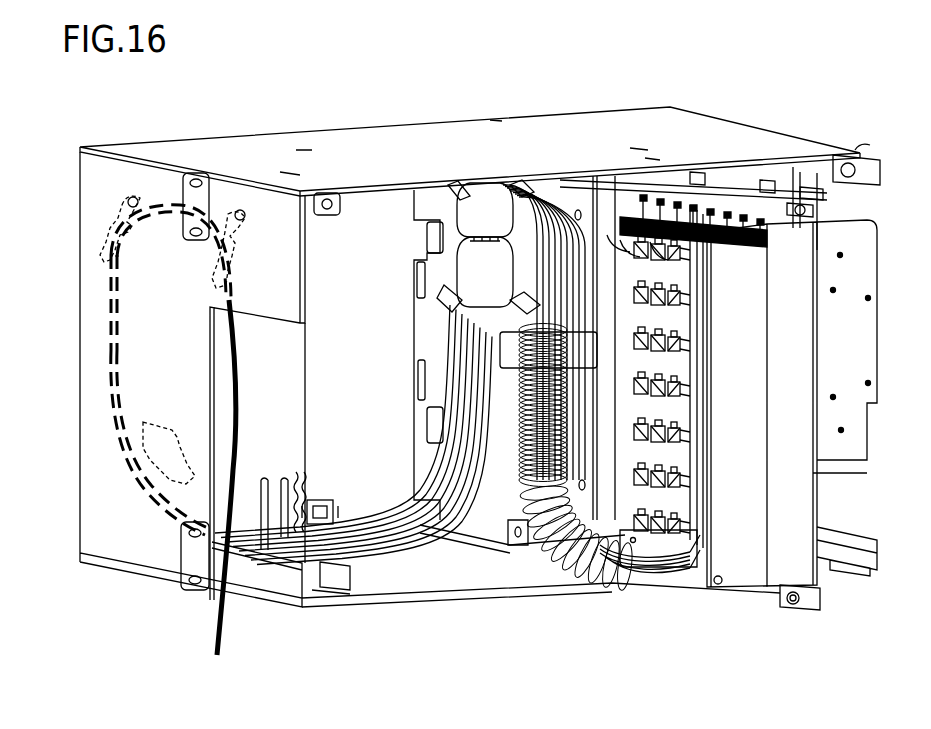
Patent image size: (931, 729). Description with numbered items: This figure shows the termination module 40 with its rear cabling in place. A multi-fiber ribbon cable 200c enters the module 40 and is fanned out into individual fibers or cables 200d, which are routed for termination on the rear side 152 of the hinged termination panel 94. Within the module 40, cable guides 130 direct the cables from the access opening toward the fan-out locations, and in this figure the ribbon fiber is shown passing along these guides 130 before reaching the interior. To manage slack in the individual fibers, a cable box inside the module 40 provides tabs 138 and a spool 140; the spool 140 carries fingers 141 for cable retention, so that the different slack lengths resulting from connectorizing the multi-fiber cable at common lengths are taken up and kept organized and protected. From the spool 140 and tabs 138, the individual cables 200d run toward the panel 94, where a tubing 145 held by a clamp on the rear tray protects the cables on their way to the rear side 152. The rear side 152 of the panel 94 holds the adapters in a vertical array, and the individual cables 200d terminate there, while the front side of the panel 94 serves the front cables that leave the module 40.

The termination module 40 is at (227, 145).
The termination panel 94 is at (747, 207).
The cable guide 130 is at (117, 240).
The tab 138 is at (510, 350).
The spool 140 is at (473, 215).
The finger 141 is at (450, 292).
The tubing 145 is at (583, 577).
The rear side 152 is at (652, 187).
The multi-fiber cable 200c is at (227, 627).
The individual fibers or cables 200d is at (393, 530).